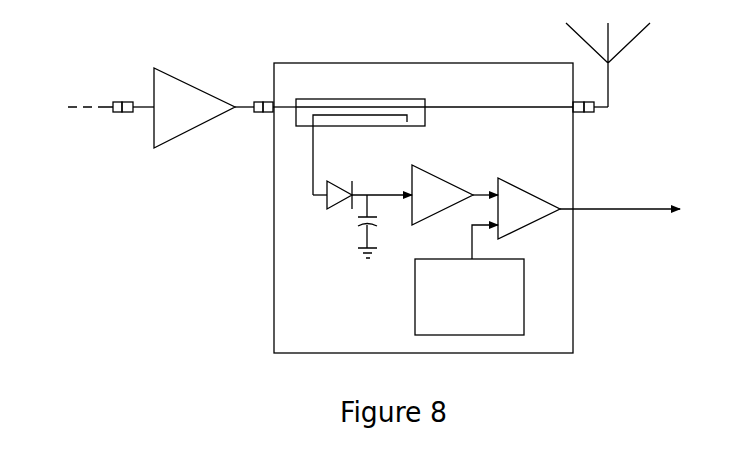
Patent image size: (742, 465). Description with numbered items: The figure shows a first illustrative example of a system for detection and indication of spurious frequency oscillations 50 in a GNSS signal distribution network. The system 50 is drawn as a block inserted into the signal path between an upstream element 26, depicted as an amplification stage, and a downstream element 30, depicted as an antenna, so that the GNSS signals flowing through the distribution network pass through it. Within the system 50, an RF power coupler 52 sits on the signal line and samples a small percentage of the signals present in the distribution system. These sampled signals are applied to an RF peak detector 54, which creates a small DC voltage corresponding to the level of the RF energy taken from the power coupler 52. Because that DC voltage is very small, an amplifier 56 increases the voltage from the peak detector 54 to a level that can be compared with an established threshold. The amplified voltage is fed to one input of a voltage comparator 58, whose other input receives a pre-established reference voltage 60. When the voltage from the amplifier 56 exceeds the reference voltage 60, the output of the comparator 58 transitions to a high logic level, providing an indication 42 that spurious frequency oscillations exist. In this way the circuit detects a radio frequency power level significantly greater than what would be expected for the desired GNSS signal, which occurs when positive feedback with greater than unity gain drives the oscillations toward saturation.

The power amplifier 26 is at (179, 141).
The antenna 30 is at (642, 57).
The indication 42 is at (610, 214).
The system for detection and indication of spurious frequency oscillations 50 is at (423, 191).
The RF power coupler 52 is at (360, 130).
The RF peak detector 54 is at (362, 203).
The amplifier 56 is at (455, 187).
The voltage comparator 58 is at (535, 196).
The reference voltage 60 is at (489, 280).